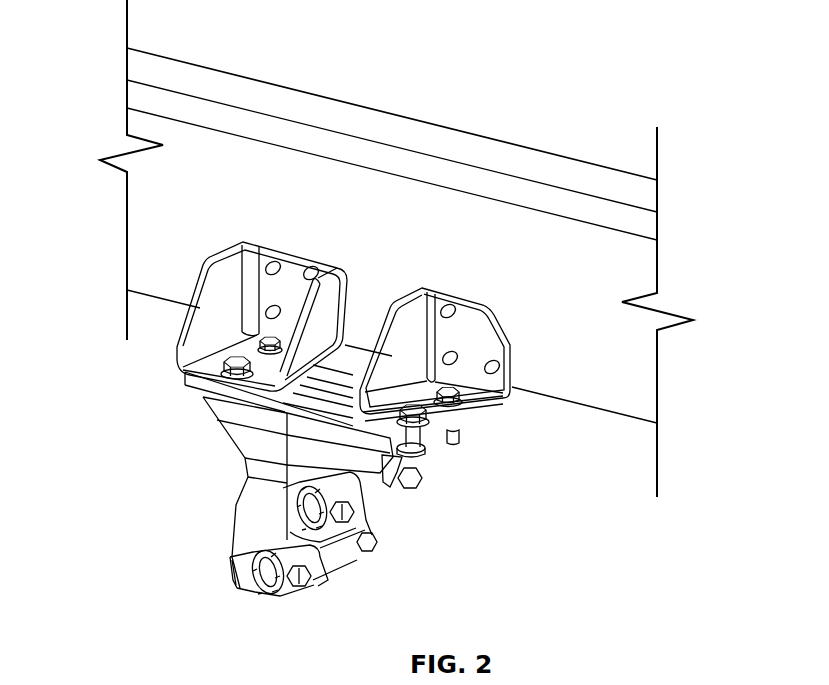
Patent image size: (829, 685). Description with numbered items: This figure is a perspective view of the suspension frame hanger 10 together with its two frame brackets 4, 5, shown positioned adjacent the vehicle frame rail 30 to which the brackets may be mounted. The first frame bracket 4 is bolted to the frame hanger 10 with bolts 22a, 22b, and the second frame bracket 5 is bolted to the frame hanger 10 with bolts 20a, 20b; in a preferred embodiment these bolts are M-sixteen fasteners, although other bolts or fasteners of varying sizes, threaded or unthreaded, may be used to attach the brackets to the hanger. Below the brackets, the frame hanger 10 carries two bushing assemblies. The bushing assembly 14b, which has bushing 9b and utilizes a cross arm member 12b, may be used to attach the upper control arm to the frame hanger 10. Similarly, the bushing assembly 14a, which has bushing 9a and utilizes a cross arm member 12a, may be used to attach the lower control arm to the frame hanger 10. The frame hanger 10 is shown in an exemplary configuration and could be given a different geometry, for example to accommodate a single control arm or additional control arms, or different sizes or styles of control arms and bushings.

The first frame bracket 4 is at (484, 340).
The second frame bracket 5 is at (291, 268).
The vehicle frame rail 30 is at (643, 258).
The bolt 20a is at (237, 355).
The bolt 20b is at (262, 341).
The bolt 22a is at (426, 408).
The bolt 22b is at (458, 388).
The frame hanger 10 is at (238, 442).
The bushing 9a is at (283, 550).
The bushing 9b is at (336, 486).
The cross arm member 12a is at (266, 590).
The cross arm member 12b is at (337, 566).
The bushing assembly 14a is at (235, 610).
The bushing assembly 14b is at (375, 520).